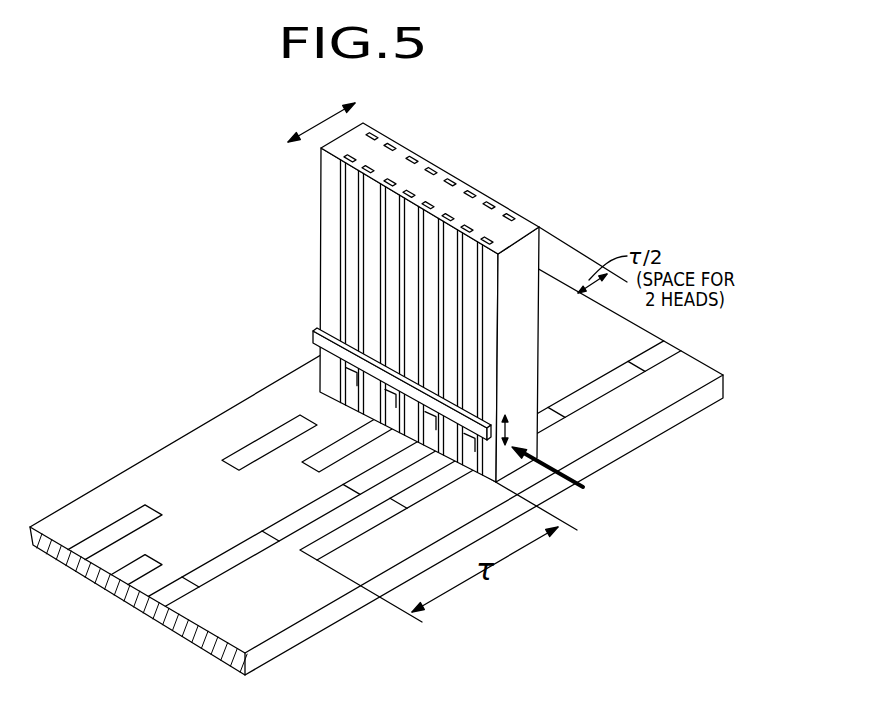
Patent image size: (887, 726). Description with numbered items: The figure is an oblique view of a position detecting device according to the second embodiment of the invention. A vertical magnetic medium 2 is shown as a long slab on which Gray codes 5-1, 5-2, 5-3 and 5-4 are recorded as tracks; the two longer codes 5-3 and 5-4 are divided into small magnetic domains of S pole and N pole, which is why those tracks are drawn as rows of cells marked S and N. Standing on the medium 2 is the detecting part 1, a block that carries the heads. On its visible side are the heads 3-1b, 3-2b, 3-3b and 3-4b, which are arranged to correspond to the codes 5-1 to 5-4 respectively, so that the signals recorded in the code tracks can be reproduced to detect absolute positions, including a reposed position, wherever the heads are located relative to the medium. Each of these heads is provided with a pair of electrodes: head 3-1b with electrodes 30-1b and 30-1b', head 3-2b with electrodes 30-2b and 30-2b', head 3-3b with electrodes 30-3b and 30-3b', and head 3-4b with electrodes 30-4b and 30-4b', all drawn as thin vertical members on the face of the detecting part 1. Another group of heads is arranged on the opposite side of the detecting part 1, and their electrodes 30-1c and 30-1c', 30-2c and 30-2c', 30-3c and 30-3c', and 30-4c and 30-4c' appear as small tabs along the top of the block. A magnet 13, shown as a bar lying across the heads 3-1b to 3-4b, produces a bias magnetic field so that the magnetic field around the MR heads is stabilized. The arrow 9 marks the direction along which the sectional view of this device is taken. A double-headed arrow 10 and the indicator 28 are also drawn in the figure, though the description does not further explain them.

The detecting part 1 is at (529, 322).
The vertical magnetic medium 2 is at (181, 447).
The arrow 9 is at (540, 458).
The head displacement direction 10 is at (316, 128).
The magnet 13 is at (312, 335).
The magnetization direction indicator 28 is at (507, 428).
The head 3-1b is at (346, 396).
The head 3-2b is at (357, 374).
The head 3-3b is at (388, 340).
The head 3-4b is at (445, 348).
The Gray code 5-1 is at (87, 552).
The Gray code 5-2 is at (127, 573).
The Gray code 5-3 is at (163, 595).
The Gray code 5-4 is at (313, 553).
The electrode 30-1b is at (313, 276).
The electrode 30-1b' is at (298, 284).
The electrode 30-2b is at (333, 302).
The electrode 30-2b' is at (318, 312).
The electrode 30-3b is at (352, 323).
The electrode 30-3b' is at (338, 334).
The electrode 30-4b is at (371, 345).
The electrode 30-4b' is at (357, 356).
The electrode 30-1c is at (386, 112).
The electrode 30-1c' is at (418, 122).
The electrode 30-2c is at (434, 142).
The electrode 30-2c' is at (470, 148).
The electrode 30-3c is at (482, 168).
The electrode 30-3c' is at (519, 174).
The electrode 30-4c is at (527, 195).
The electrode 30-4c' is at (555, 225).